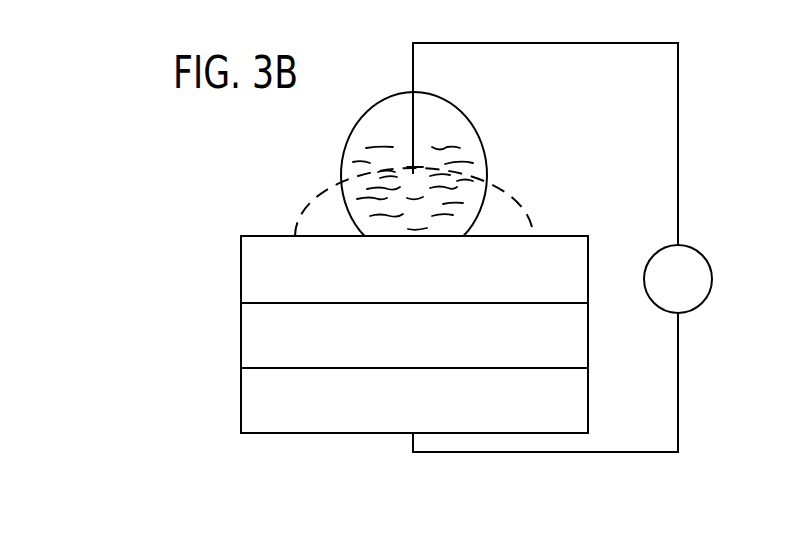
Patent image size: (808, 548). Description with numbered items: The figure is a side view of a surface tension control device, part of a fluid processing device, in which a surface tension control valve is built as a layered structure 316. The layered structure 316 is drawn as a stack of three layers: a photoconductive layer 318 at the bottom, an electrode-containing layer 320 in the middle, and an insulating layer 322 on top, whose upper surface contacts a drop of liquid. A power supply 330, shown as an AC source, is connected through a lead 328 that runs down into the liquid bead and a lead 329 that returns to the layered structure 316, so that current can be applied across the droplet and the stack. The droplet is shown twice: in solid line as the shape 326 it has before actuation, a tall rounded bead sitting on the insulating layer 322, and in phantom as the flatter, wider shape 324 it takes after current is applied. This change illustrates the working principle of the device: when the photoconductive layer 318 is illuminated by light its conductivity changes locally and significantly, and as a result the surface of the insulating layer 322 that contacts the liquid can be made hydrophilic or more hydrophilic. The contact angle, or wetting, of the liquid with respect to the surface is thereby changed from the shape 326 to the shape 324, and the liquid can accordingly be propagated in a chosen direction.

The layered structure 316 is at (414, 382).
The photoconductive layer 318 is at (432, 412).
The electrode-containing layer 320 is at (432, 347).
The insulating layer 322 is at (432, 282).
The liquid droplet shape after actuation 324 is at (528, 223).
The liquid droplet shape before actuation 326 is at (483, 145).
The lead 328 is at (627, 43).
The lead 329 is at (622, 452).
The power supply 330 is at (686, 245).